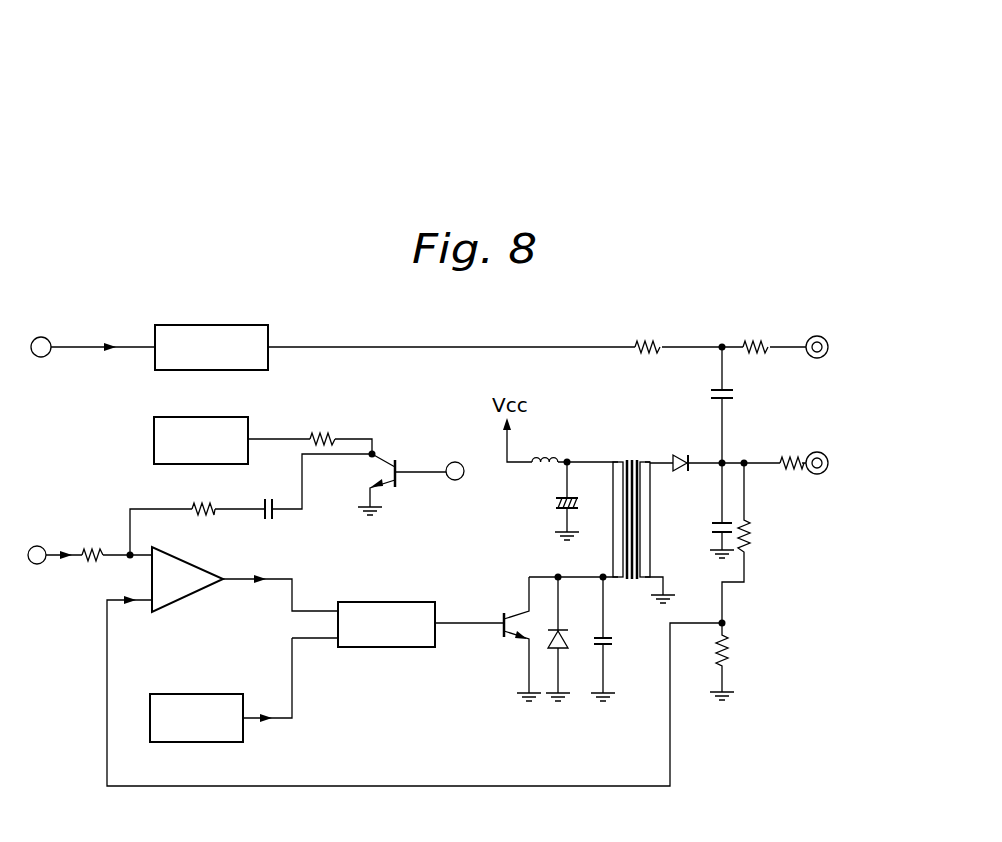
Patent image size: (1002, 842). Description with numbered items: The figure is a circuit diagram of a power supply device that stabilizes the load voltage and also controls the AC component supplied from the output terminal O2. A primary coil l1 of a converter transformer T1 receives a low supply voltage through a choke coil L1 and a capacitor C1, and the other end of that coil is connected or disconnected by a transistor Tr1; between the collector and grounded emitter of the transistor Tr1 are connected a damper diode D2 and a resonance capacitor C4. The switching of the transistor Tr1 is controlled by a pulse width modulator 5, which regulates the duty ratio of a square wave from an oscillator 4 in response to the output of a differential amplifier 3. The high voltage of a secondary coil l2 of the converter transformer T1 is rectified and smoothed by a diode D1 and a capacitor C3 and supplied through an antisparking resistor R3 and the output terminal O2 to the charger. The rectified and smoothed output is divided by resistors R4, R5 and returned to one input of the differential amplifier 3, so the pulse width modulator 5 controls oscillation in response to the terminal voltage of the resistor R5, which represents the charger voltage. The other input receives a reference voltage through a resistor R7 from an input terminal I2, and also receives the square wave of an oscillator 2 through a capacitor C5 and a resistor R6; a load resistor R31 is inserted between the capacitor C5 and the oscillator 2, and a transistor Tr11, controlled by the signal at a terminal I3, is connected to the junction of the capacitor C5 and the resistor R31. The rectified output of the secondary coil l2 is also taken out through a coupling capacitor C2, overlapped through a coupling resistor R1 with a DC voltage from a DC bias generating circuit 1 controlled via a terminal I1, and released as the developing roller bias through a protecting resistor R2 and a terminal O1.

The DC bias generating circuit 1 is at (210, 324).
The oscillator 2 is at (200, 417).
The differential amplifier 3 is at (197, 565).
The oscillator 4 is at (191, 694).
The pulse width modulator 5 is at (394, 601).
The input terminal I1 is at (41, 337).
The input terminal I2 is at (37, 546).
The terminal I3 is at (455, 481).
The terminal O1 is at (822, 337).
The output terminal O2 is at (829, 456).
The coupling resistor R1 is at (647, 343).
The protecting resistor R2 is at (757, 343).
The antisparking resistor R3 is at (775, 458).
The load resistor R31 is at (325, 437).
The resistor R4 is at (751, 534).
The resistor R5 is at (738, 648).
The resistor R6 is at (194, 507).
The resistor R7 is at (91, 563).
The capacitor C1 is at (553, 500).
The coupling capacitor C2 is at (735, 394).
The capacitor C3 is at (710, 528).
The resonance capacitor C4 is at (612, 641).
The capacitor C5 is at (266, 498).
The choke coil L1 is at (547, 459).
The converter transformer T1 is at (629, 460).
The primary coil l1 is at (615, 508).
The secondary coil l2 is at (650, 517).
The diode D1 is at (676, 458).
The damper diode D2 is at (566, 648).
The transistor Tr1 is at (513, 634).
The transistor Tr11 is at (386, 469).